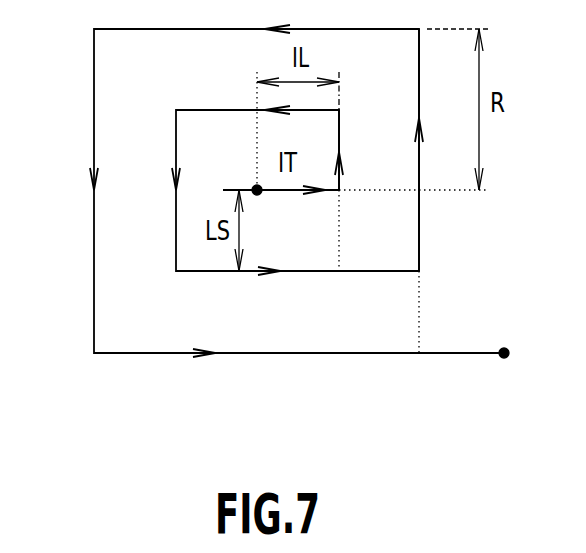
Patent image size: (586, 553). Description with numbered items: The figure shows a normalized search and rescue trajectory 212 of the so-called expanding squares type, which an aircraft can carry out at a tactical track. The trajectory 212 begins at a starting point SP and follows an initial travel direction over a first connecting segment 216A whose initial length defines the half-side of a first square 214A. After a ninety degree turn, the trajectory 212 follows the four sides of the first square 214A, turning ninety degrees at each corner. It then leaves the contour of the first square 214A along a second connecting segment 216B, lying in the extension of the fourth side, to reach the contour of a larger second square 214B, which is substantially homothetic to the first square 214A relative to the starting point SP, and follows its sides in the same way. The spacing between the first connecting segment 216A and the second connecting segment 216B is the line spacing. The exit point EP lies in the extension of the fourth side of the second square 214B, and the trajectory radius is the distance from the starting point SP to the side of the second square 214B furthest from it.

The search and rescue trajectory 212 is at (131, 372).
The first square 214A is at (339, 135).
The second square 214B is at (419, 249).
The first connecting segment 216A is at (292, 190).
The second connecting segment 216B is at (352, 271).
The starting point SP is at (253, 188).
The exit point EP is at (508, 350).